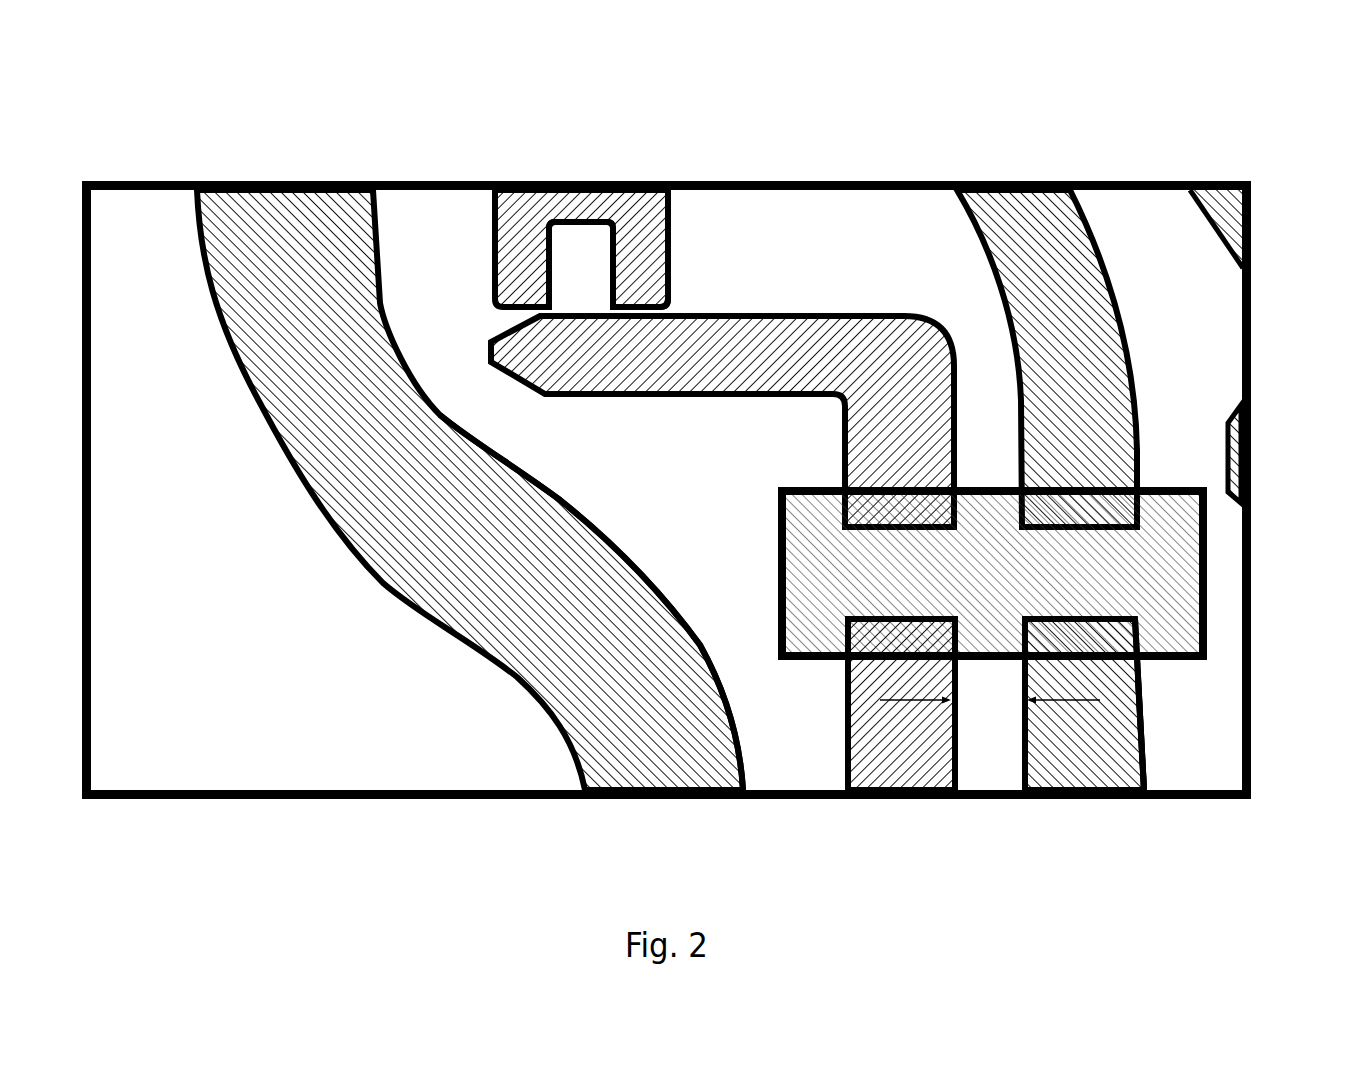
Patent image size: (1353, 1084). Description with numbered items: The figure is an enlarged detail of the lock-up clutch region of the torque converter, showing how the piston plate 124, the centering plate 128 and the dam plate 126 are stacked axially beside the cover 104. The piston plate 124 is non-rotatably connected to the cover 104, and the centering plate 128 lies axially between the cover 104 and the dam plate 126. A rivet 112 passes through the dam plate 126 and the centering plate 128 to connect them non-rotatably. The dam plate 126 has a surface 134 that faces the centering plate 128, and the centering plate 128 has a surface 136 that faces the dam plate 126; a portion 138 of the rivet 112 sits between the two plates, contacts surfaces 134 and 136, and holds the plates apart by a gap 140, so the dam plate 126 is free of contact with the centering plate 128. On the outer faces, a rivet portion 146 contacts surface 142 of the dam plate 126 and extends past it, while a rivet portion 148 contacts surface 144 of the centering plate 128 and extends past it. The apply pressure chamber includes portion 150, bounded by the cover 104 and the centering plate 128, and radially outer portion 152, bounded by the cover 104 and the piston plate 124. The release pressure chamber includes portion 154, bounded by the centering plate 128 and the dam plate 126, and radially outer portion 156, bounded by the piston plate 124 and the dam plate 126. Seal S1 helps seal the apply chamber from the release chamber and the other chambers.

The cover 104 is at (197, 242).
The portion of chamber 130 152 is at (413, 238).
The portion of chamber 130 150 is at (578, 450).
The piston plate 124 is at (517, 208).
The seal S1 is at (580, 248).
The portion of chamber 132 156 is at (903, 227).
The centering plate 128 is at (492, 335).
The surface 134 is at (1003, 280).
The portion of rivet 138 is at (982, 487).
The rivet 112 is at (1200, 478).
The portion of rivet 146 is at (1207, 562).
The portion of rivet 148 is at (778, 535).
The surface 144 is at (848, 767).
The surface 136 is at (953, 767).
The portion of chamber 132 154 is at (997, 715).
The dam plate 126 is at (1150, 732).
The surface 142 is at (1145, 767).
The gap 140 is at (1077, 697).